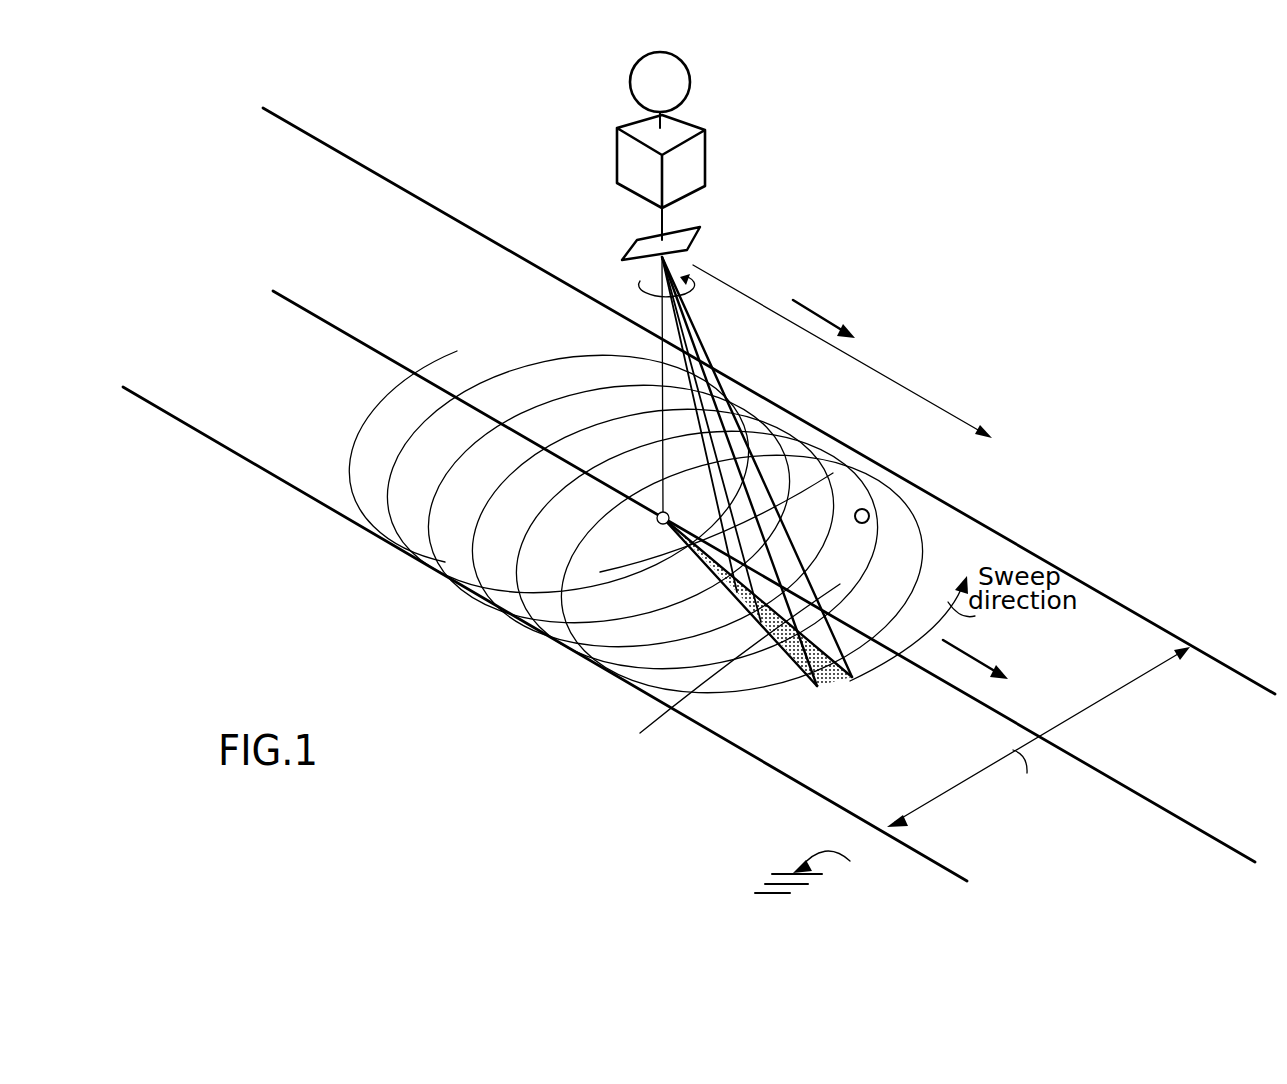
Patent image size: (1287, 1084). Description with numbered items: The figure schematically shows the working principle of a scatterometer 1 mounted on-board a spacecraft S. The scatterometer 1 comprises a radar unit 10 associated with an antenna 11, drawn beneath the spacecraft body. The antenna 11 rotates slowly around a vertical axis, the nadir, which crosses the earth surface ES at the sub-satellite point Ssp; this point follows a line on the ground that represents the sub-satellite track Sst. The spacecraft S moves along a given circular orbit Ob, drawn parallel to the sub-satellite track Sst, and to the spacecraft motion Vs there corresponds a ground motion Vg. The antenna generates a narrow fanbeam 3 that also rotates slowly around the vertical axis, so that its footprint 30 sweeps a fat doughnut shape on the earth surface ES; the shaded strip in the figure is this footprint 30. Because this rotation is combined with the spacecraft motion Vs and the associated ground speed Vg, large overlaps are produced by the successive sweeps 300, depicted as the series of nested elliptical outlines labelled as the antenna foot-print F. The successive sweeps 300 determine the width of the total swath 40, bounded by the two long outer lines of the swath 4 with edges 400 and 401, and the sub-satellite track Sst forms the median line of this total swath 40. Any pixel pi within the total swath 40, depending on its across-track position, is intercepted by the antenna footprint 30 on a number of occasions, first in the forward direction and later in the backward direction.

The scatterometer 1 is at (670, 164).
The spacecraft S is at (622, 86).
The radar unit 10 is at (625, 170).
The antenna 11 is at (641, 243).
The circular orbit Ob is at (906, 388).
The spacecraft motion Vs is at (824, 312).
The narrow fanbeam 3 is at (767, 463).
The footprint 30 is at (850, 682).
The successive sweeps 300 is at (892, 665).
The antenna foot-print F is at (715, 691).
The sub-satellite point Ssp is at (655, 522).
The pixel pi is at (864, 508).
The swath (observed ground strip) 4 is at (699, 494).
The far swath edge 400 is at (1072, 573).
The near swath edge 401 is at (843, 812).
The total swath 40 is at (1137, 677).
The sub-satellite track Sst is at (1117, 779).
The ground motion Vg is at (975, 656).
The earth surface ES is at (819, 872).